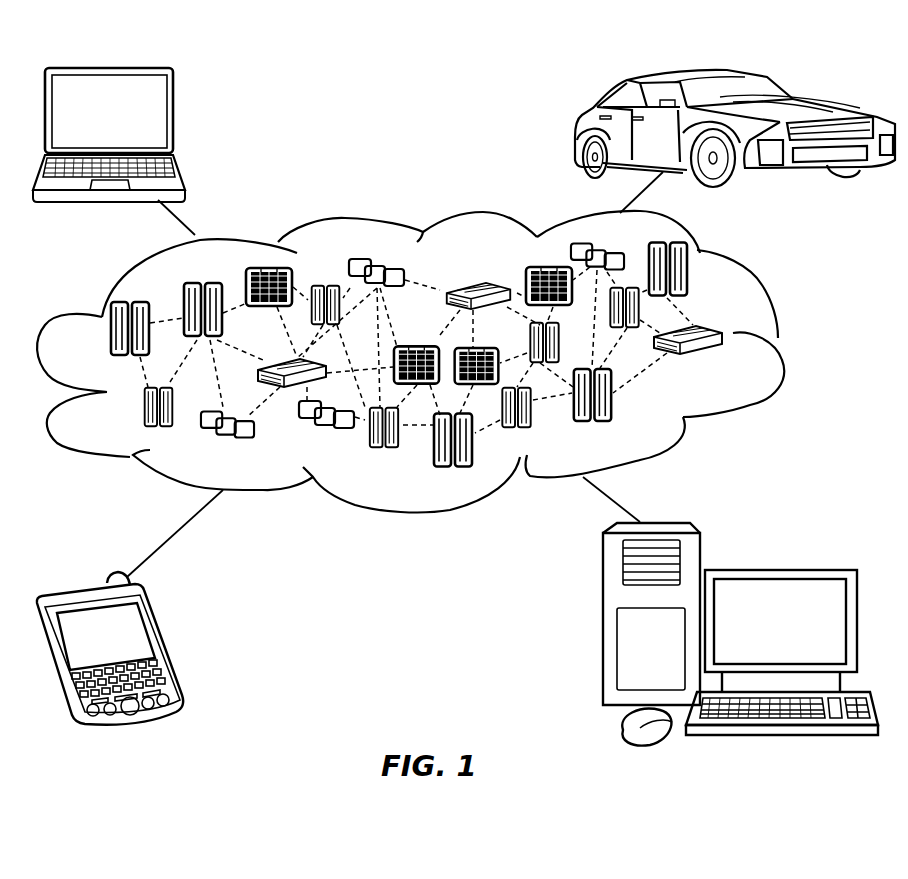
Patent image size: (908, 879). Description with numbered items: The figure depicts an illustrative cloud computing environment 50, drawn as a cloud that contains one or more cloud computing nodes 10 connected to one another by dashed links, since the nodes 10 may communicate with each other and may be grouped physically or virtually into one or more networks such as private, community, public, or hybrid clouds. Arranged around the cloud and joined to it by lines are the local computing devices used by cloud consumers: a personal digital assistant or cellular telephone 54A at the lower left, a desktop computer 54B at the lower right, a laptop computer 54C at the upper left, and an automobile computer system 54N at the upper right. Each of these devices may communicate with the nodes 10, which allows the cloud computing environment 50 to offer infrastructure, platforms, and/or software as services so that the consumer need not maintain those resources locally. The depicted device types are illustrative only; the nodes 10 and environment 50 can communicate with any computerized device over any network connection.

The cloud computing node 10 is at (727, 362).
The cloud computing environment 50 is at (780, 340).
The personal digital assistant or cellular telephone 54A is at (163, 643).
The desktop computer 54B is at (778, 567).
The laptop computer 54C is at (173, 119).
The automobile computer system 54N is at (577, 135).